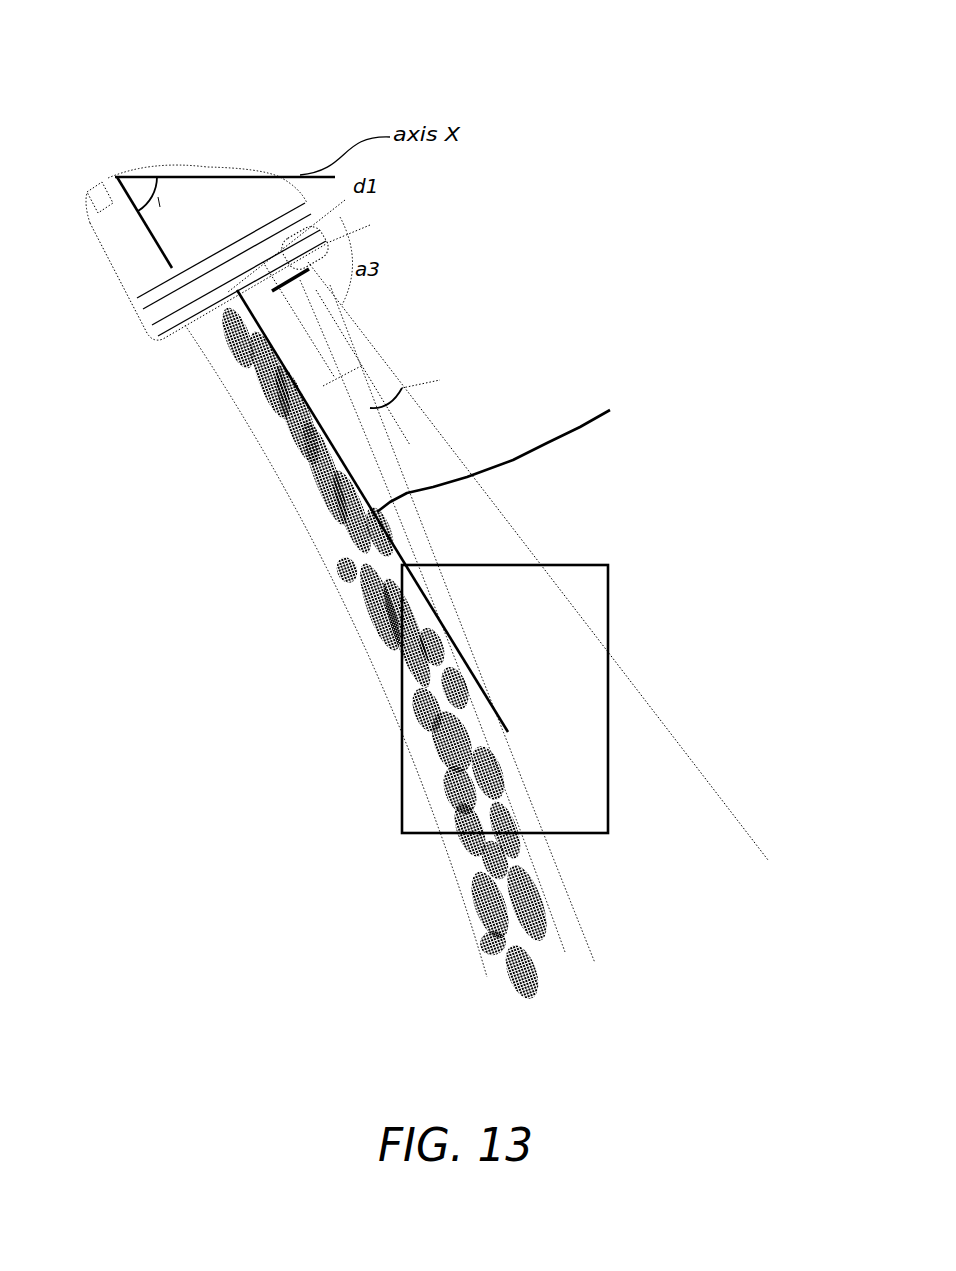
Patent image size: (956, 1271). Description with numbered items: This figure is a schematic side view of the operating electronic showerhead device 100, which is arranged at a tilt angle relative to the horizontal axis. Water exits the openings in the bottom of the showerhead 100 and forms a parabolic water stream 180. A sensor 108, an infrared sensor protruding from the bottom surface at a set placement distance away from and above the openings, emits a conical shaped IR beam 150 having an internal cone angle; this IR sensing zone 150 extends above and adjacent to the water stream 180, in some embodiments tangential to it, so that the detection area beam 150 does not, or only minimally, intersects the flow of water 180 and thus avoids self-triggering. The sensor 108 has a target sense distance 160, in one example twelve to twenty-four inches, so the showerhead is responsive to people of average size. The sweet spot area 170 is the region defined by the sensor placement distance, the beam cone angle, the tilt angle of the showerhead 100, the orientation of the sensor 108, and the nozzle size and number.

The electronic showerhead device 100 is at (110, 232).
The sensor 108 is at (303, 247).
The conical shaped IR beam 150 is at (450, 448).
The target sense distance 160 is at (323, 386).
The sweet spot area 170 is at (585, 699).
The water stream 180 is at (317, 483).